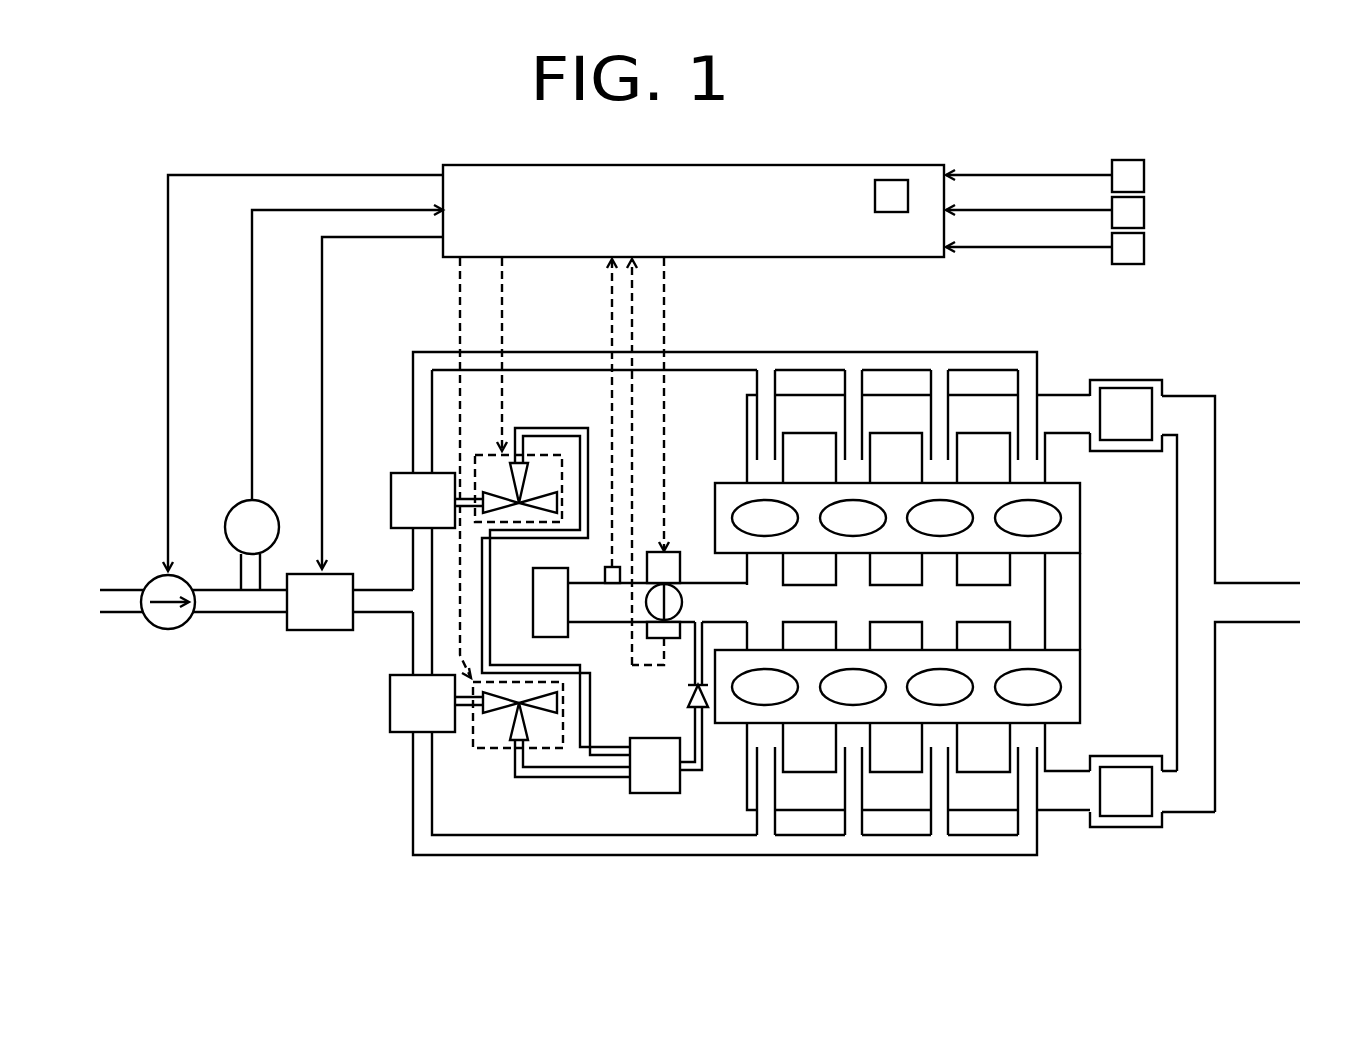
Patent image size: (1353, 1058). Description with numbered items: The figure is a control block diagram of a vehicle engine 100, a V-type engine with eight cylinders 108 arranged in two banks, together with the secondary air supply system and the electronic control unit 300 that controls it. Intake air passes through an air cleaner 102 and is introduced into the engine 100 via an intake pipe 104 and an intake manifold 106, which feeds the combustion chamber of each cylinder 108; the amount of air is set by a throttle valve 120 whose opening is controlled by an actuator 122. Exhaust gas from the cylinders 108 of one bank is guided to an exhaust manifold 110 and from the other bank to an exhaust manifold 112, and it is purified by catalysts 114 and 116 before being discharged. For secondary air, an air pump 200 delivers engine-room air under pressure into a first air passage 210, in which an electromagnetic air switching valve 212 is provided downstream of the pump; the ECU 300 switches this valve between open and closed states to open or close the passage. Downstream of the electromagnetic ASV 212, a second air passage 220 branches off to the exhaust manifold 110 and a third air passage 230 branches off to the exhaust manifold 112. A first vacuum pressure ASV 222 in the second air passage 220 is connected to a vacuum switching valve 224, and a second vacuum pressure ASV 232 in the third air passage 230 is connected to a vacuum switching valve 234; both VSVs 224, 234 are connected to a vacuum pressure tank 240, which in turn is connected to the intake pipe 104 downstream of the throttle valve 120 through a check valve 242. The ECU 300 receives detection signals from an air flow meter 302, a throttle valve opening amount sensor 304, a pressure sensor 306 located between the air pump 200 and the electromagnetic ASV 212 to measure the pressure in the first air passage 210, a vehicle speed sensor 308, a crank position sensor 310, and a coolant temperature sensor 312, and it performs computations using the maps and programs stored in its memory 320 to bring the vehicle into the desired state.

The engine 100 is at (974, 546).
The air cleaner 102 is at (533, 615).
The intake pipe 104 is at (608, 621).
The intake manifold 106 is at (1047, 602).
The cylinder 108 is at (788, 500).
The exhaust manifold 110 is at (738, 772).
The exhaust manifold 112 is at (738, 468).
The catalyst 114 is at (1128, 767).
The catalyst 116 is at (1128, 388).
The throttle valve 120 is at (682, 593).
The actuator 122 is at (660, 552).
The air pump 200 is at (158, 630).
The first air passage 210 is at (250, 612).
The electromagnetic air switching valve 212 is at (313, 630).
The second air passage 220 is at (790, 855).
The vacuum pressure ASV (1) 222 is at (390, 708).
The vacuum switching valve 224 is at (493, 748).
The third air passage 230 is at (805, 352).
The vacuum pressure ASV (2) 232 is at (391, 492).
The vacuum switching valve 234 is at (500, 450).
The vacuum pressure tank 240 is at (630, 785).
The check valve 242 is at (688, 697).
The electronic control unit 300 is at (760, 166).
The air flow meter 302 is at (605, 571).
The throttle valve opening amount sensor 304 is at (677, 640).
The pressure sensor 306 is at (262, 501).
The vehicle speed sensor 308 is at (1144, 176).
The crank position sensor 310 is at (1144, 212).
The coolant temperature sensor 312 is at (1144, 249).
The memory 320 is at (893, 180).